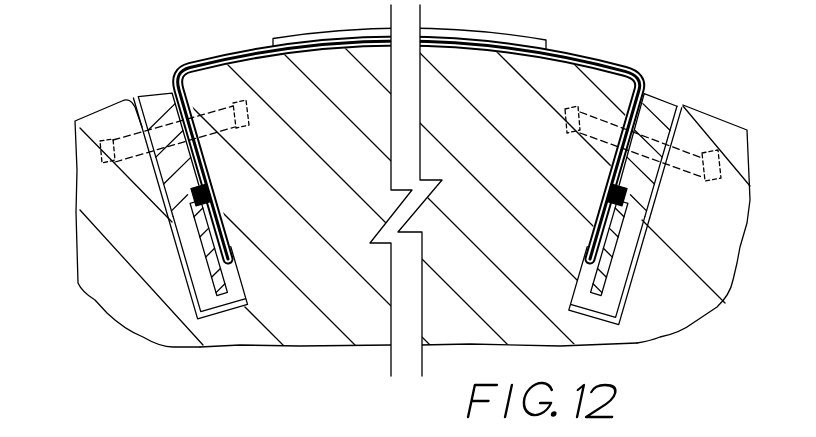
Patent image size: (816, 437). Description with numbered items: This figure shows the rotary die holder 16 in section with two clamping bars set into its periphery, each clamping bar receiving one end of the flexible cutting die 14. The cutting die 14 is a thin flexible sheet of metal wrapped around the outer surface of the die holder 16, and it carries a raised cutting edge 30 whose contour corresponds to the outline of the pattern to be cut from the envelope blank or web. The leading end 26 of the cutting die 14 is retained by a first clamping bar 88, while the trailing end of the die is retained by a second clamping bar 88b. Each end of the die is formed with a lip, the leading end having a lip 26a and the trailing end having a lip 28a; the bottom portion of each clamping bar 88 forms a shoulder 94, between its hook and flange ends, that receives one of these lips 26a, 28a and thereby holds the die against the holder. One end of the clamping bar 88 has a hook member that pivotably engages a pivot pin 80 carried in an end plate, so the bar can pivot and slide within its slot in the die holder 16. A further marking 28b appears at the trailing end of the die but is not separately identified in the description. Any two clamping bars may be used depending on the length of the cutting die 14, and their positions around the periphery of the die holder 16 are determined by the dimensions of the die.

The cutting die 14 is at (612, 67).
The rotary die holder 16 is at (640, 258).
The leading end 26 is at (213, 293).
The lip 26a is at (195, 200).
The lip 28a is at (610, 270).
The piezoelectric strip element 28b is at (612, 209).
The raised cutting edge 30 is at (522, 44).
The pivot pin 80 is at (102, 115).
The clamping bar 88 is at (152, 103).
The second clamping bar 88b is at (653, 102).
The shoulder 94 is at (192, 190).